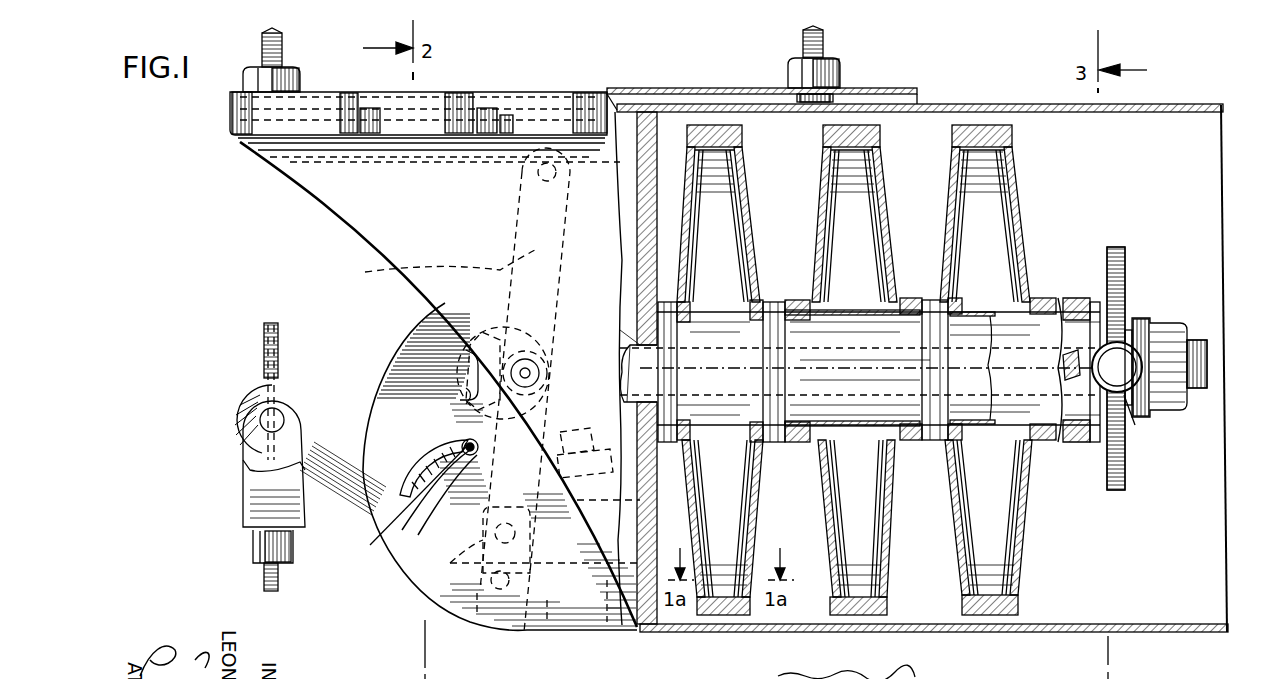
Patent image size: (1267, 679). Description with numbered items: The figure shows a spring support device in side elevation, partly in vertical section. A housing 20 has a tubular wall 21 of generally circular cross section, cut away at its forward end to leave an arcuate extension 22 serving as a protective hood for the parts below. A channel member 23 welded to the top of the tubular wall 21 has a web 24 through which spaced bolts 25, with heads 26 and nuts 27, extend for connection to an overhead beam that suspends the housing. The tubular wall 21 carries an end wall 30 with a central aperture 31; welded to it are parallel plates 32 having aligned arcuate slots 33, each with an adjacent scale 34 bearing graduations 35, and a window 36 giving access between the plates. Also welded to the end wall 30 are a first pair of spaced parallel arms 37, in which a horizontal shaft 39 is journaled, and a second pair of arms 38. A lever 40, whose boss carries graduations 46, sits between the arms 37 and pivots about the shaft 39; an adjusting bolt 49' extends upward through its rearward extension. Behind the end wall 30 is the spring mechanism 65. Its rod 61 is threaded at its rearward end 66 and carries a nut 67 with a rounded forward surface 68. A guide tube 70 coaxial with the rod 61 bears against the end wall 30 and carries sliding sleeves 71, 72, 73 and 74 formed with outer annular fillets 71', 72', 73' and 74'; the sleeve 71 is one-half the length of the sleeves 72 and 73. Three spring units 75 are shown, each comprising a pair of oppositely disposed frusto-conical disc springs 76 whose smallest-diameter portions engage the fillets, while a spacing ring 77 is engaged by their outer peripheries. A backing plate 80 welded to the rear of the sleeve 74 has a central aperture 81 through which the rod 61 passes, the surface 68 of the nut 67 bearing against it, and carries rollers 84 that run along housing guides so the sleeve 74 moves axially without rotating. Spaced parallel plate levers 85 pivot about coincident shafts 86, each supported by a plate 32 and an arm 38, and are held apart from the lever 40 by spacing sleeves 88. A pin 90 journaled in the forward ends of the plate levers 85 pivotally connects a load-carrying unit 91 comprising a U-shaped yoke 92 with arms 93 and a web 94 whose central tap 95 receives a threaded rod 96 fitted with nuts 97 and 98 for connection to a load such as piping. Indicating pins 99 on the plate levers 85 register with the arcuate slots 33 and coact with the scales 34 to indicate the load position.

The housing 20 is at (940, 352).
The tubular wall 21 is at (1020, 104).
The arcuate extension 22 is at (290, 163).
The channel member 23 is at (470, 102).
The web 24 is at (648, 80).
The bolts 25 is at (262, 47).
The heads 26 is at (232, 108).
The nuts 27 is at (300, 85).
The end wall 30 is at (640, 195).
The central through aperture 31 is at (628, 352).
The parallel plates 32 is at (472, 407).
The arcuate slots 33 is at (384, 501).
The scale 34 is at (470, 404).
The graduations 35 is at (440, 455).
The window 36 is at (420, 358).
The first pair of spaced parallel arms 37 is at (552, 628).
The second pair of spaced parallel arms 38 is at (637, 630).
The horizontal shaft 39 is at (472, 620).
The lever 40 is at (566, 190).
The graduations 46 is at (500, 376).
The adjusting bolt 49' is at (592, 621).
The rod 61 is at (590, 345).
The spring mechanism 65 is at (1050, 542).
The threaded rearward end 66 is at (1207, 350).
The nut 67 is at (1165, 328).
The rounded forward surface 68 is at (1124, 340).
The guide tube 70 is at (870, 340).
The sleeve 71 is at (673, 346).
The outer annular fillet 71' is at (676, 473).
The sleeve 72 is at (780, 346).
The outer annular fillets 72' is at (780, 474).
The sleeve 73 is at (931, 353).
The outer annular fillets 73' is at (931, 475).
The sleeve 74 is at (1065, 347).
The outer annular fillet 74' is at (1060, 473).
The spring units 75 is at (748, 185).
The disc springs 76 is at (690, 215).
The spacing ring 77 is at (746, 130).
The backing plate 80 is at (1124, 278).
The central aperture 81 is at (1132, 412).
The roller 84 is at (1118, 450).
The plate levers 85 is at (318, 385).
The shafts 86 is at (454, 560).
The spacing sleeves 88 is at (434, 267).
The pin 90 is at (252, 420).
The load-carrying unit 91 is at (240, 575).
The U-shaped yoke 92 is at (222, 484).
The arms 93 is at (248, 490).
The web 94 is at (255, 540).
The tap 95 is at (245, 518).
The threaded rod 96 is at (280, 580).
The nut 97 is at (266, 575).
The nut 98 is at (288, 558).
The indicating pins 99 is at (440, 500).